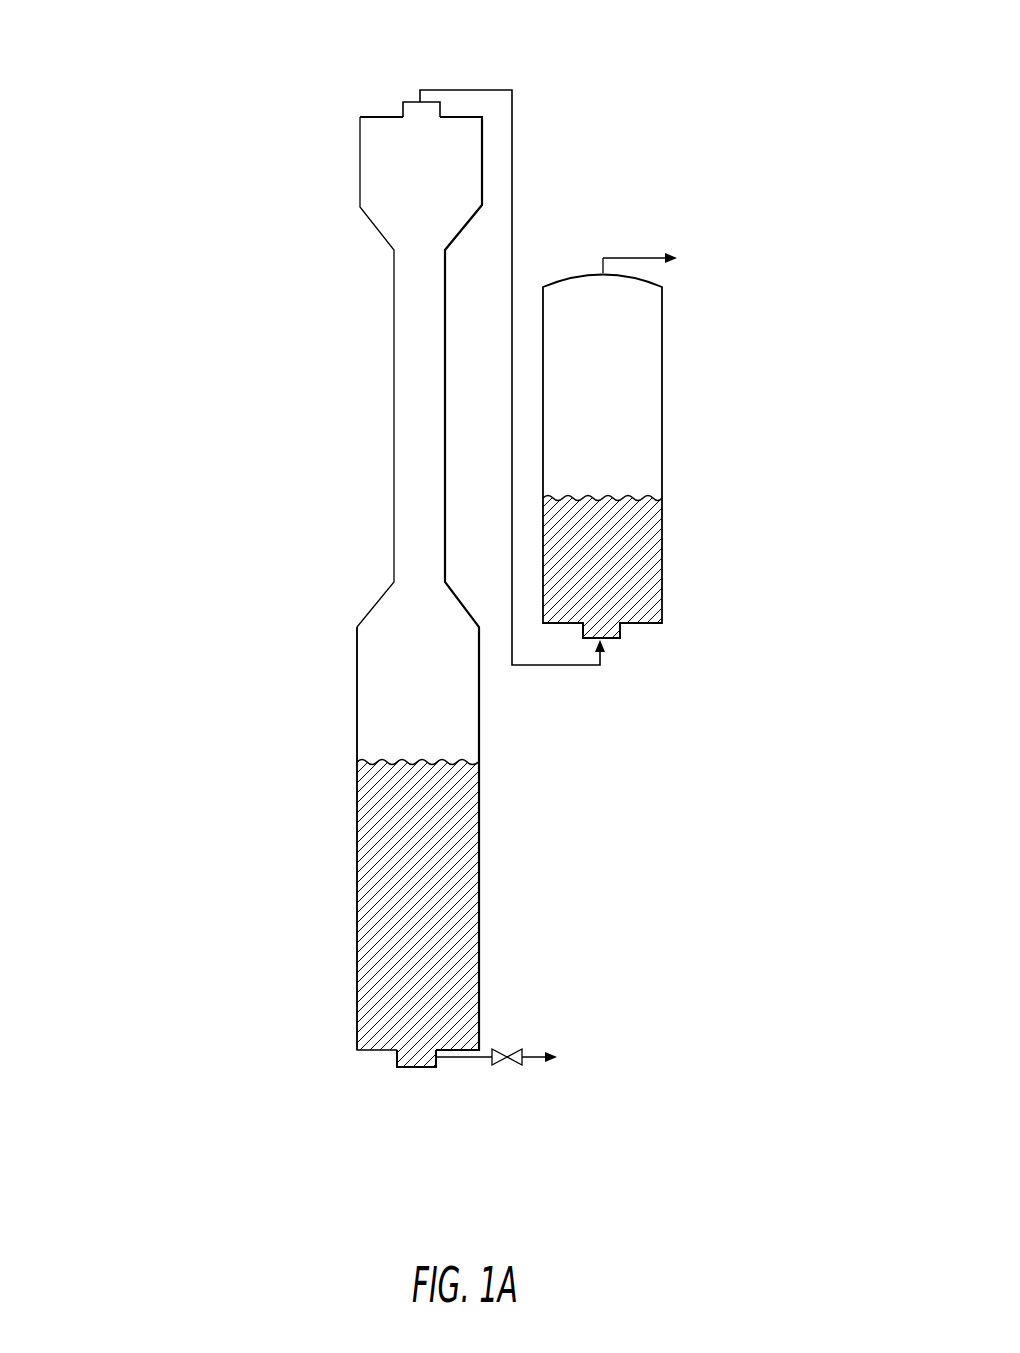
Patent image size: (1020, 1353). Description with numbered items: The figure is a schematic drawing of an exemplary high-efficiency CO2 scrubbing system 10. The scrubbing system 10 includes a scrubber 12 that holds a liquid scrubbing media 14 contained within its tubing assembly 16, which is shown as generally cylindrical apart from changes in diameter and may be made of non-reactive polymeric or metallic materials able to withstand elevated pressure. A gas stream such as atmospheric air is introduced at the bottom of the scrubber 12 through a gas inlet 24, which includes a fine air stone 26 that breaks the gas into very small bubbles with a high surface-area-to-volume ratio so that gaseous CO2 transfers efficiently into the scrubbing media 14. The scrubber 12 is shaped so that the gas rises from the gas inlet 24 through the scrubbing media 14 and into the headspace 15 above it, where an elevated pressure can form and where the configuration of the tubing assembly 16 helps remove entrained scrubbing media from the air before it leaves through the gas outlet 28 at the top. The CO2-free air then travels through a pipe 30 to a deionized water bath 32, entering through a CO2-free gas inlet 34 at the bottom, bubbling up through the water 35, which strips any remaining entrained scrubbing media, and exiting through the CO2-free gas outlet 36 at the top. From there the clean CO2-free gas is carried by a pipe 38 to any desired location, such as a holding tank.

The scrubbing system 10 is at (170, 150).
The scrubber 12 is at (296, 680).
The scrubbing media 14 is at (408, 885).
The headspace 15 is at (431, 679).
The tubing assembly 16 is at (357, 735).
The gas inlet 24 is at (419, 1090).
The fine air stone 26 is at (413, 1069).
The gas outlet 28 is at (397, 84).
The pipe 30 is at (522, 138).
The deionized water bath 32 is at (697, 400).
The CO2-free gas inlet 34 is at (612, 662).
The water 35 is at (600, 562).
The CO2-free gas outlet 36 is at (605, 245).
The pipe 38 is at (648, 245).